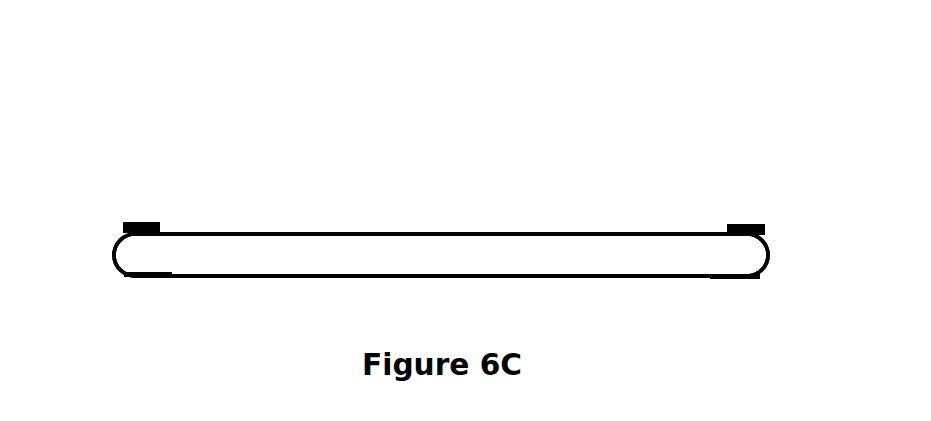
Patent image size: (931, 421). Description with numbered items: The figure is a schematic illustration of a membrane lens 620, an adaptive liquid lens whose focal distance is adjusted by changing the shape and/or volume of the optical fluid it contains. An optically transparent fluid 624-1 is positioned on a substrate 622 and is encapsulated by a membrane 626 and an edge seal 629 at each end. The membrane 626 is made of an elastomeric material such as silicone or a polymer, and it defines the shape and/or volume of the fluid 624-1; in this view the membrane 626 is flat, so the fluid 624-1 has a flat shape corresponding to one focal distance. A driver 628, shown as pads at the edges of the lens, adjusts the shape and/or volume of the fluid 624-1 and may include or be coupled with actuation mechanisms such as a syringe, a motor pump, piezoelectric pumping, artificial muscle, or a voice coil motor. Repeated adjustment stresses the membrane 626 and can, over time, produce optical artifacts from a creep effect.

The membrane lens 620 is at (166, 80).
The bottom layer 622 is at (213, 277).
The fluid 624-1 is at (642, 262).
The membrane 626 is at (390, 233).
The driver 628 is at (138, 222).
The edge seal 629 is at (115, 253).